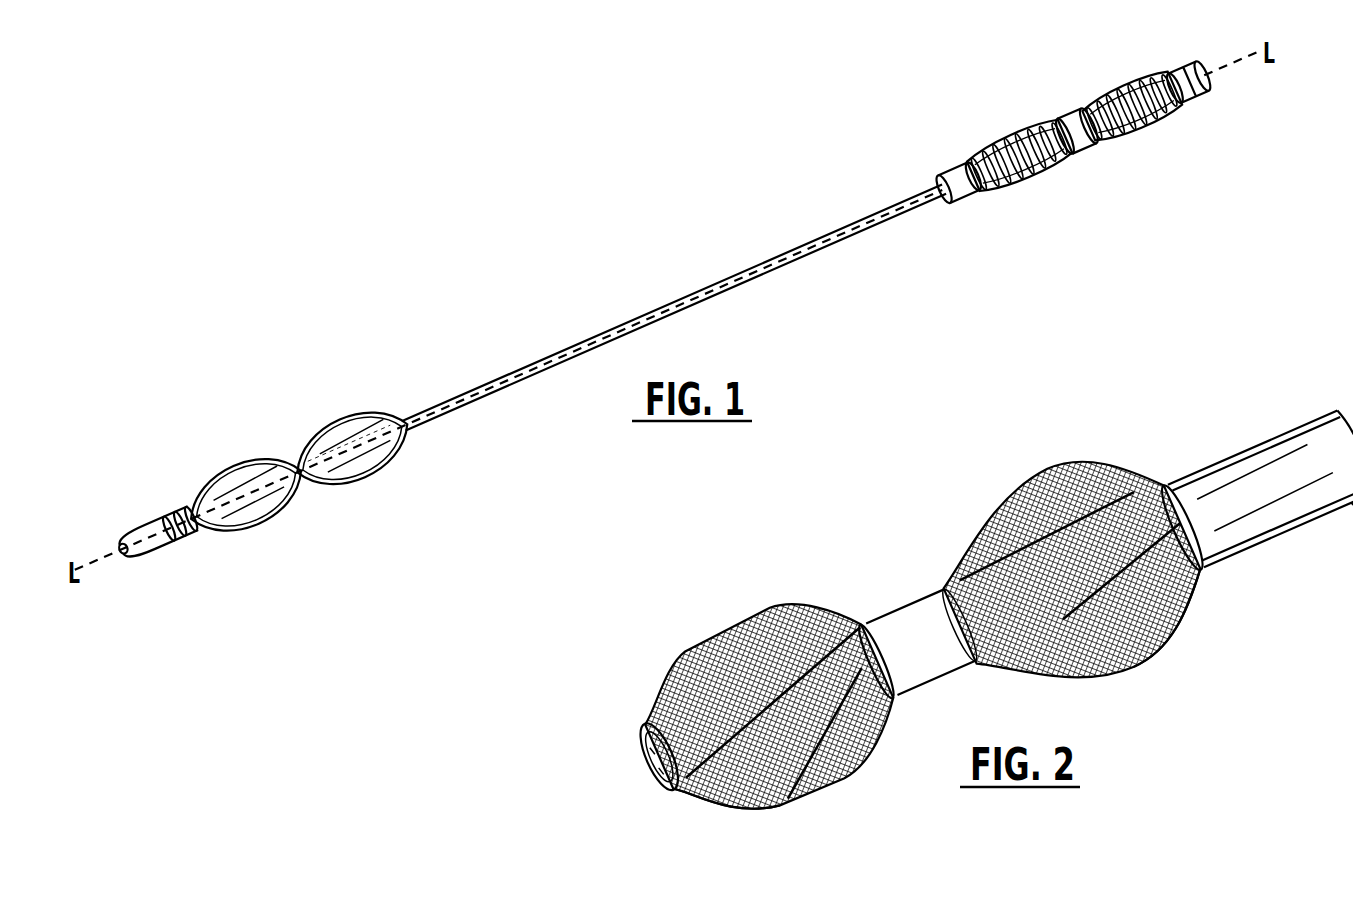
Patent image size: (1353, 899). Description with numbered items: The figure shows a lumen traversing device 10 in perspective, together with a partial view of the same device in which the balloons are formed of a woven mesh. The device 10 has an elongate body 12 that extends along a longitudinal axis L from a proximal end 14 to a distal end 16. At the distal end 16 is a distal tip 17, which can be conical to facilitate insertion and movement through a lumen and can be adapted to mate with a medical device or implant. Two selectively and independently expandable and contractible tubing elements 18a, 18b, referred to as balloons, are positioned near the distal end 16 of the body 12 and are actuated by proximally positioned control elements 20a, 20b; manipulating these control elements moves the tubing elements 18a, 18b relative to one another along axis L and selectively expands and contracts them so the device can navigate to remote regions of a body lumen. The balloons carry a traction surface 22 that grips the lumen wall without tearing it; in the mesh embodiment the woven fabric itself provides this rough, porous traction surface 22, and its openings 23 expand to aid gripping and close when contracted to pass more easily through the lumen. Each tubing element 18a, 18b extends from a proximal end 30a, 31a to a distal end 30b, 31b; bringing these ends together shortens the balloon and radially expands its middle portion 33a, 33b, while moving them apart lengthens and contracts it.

In FIG. 1, the device 10 is at (668, 352).
In FIG. 2, the device 10 is at (984, 631).
In FIG. 1, the elongate body 12 is at (754, 283).
In FIG. 2, the elongate body 12 is at (1326, 433).
In FIG. 1, the proximal end 14 is at (1081, 138).
In FIG. 1, the distal end 16 is at (269, 526).
In FIG. 2, the distal end 16 is at (939, 649).
In FIG. 1, the distal tip 17 is at (143, 524).
In FIG. 1, the tubing element 18a is at (364, 480).
In FIG. 2, the tubing element 18a is at (1070, 564).
In FIG. 1, the tubing element 18b is at (265, 522).
In FIG. 2, the tubing element 18b is at (768, 716).
In FIG. 1, the control element 20a is at (1133, 82).
In FIG. 1, the control element 20b is at (1020, 134).
In FIG. 1, the traction surface 22 is at (363, 432).
In FIG. 2, the traction surface 22 is at (1053, 469).
In FIG. 2, the openings 23 is at (693, 651).
In FIG. 2, the proximal end 30a is at (1197, 574).
In FIG. 2, the distal end 30b is at (978, 668).
In FIG. 2, the proximal end 31a is at (888, 704).
In FIG. 2, the distal end 31b is at (677, 788).
In FIG. 2, the middle portion 33a is at (1133, 668).
In FIG. 2, the middle portion 33b is at (808, 798).